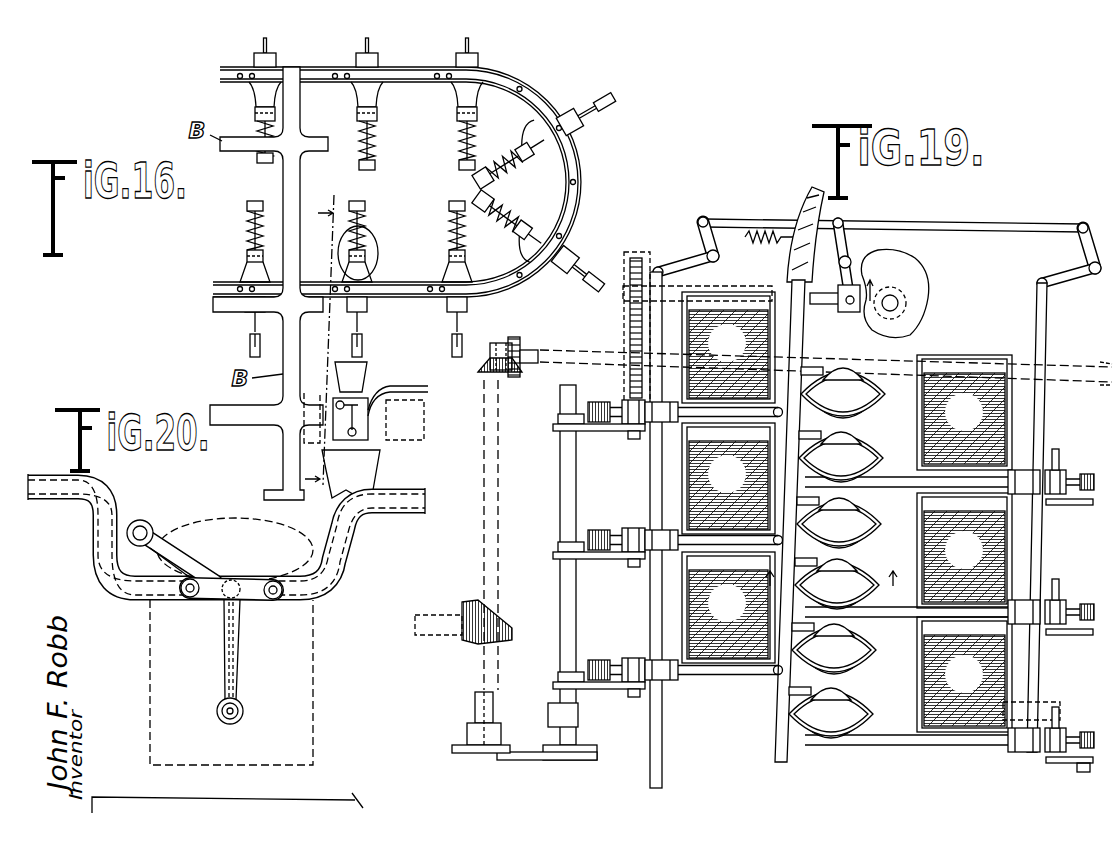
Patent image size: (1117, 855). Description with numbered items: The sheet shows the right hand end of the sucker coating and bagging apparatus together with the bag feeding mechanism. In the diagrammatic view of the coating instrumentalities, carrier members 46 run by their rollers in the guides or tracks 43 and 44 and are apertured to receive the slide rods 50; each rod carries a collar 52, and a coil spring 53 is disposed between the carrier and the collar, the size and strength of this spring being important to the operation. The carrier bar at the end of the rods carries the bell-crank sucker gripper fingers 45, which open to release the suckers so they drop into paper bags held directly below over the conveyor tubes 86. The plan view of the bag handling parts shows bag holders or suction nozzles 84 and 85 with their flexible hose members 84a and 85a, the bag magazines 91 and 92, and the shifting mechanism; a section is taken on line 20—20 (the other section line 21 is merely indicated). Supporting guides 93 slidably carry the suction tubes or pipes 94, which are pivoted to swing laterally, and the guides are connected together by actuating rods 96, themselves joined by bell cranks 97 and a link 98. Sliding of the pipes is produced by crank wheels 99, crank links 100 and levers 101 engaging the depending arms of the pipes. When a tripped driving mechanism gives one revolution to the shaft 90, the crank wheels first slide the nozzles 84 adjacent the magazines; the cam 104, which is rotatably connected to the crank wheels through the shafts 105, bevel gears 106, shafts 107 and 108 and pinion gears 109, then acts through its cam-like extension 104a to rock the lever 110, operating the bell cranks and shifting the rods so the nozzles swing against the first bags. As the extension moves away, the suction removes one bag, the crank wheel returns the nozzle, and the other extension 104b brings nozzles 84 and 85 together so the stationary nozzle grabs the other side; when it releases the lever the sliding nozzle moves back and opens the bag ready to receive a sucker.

In FIG. 19, the section line 20- 20 is at (831, 587).
In FIG. 16, the section line 21- 21 is at (315, 348).
In FIG. 16, the guide or track 43 is at (416, 296).
In FIG. 16, the guide or track 44 is at (400, 285).
In FIG. 16, the sucker gripper fingers 45 is at (250, 343).
In FIG. 16, the carrier member 46 is at (472, 104).
In FIG. 16, the slide rod 50 is at (250, 218).
In FIG. 16, the collar 52 is at (373, 167).
In FIG. 16, the coil spring 53 is at (380, 150).
In FIG. 19, the bag holder or suction nozzle 84 is at (860, 428).
In FIG. 19, the flexible hose member 84a is at (588, 412).
In FIG. 20, the bag holder or suction nozzle 85 is at (238, 661).
In FIG. 19, the bag holder or suction nozzle 85 is at (852, 368).
In FIG. 19, the flexible hose member 85a is at (812, 198).
In FIG. 20, the conveyor tube 86 is at (244, 802).
In FIG. 19, the shaft 90 is at (421, 634).
In FIG. 19, the bag magazine 91 is at (728, 477).
In FIG. 19, the bag magazine 92 is at (964, 543).
In FIG. 19, the supporting guide 93 is at (652, 425).
In FIG. 16, the suction tube or pipe 94 is at (405, 391).
In FIG. 20, the suction tube or pipe 94 is at (60, 494).
In FIG. 19, the suction tube or pipe 94 is at (723, 545).
In FIG. 19, the actuating rod or bar 96 is at (651, 598).
In FIG. 19, the bell crank 97 is at (690, 261).
In FIG. 19, the link 98 is at (930, 223).
In FIG. 19, the crank wheel 99 is at (480, 754).
In FIG. 19, the crank link 100 is at (558, 761).
In FIG. 19, the lever 101 is at (625, 431).
In FIG. 19, the cam 104 is at (918, 300).
In FIG. 19, the cam-like extension 104a is at (925, 319).
In FIG. 19, the cam-like extension 104b is at (880, 258).
In FIG. 19, the shaft 105 is at (500, 601).
In FIG. 19, the bevel gear 106 is at (513, 342).
In FIG. 19, the shaft 107 is at (612, 353).
In FIG. 19, the shaft 108 is at (708, 290).
In FIG. 19, the pinion gear 109 is at (626, 328).
In FIG. 19, the lever 110 is at (846, 241).